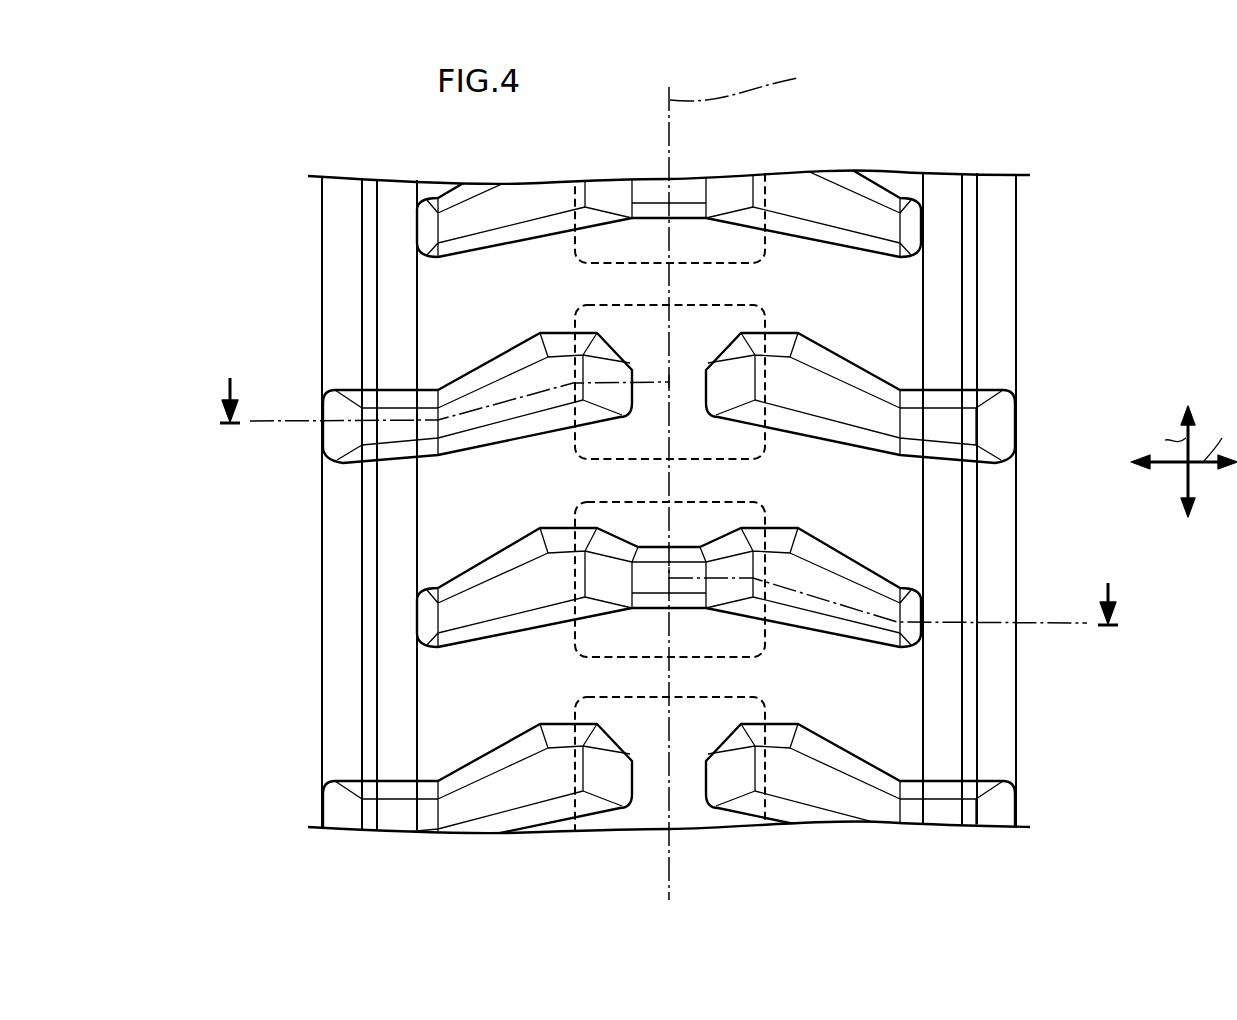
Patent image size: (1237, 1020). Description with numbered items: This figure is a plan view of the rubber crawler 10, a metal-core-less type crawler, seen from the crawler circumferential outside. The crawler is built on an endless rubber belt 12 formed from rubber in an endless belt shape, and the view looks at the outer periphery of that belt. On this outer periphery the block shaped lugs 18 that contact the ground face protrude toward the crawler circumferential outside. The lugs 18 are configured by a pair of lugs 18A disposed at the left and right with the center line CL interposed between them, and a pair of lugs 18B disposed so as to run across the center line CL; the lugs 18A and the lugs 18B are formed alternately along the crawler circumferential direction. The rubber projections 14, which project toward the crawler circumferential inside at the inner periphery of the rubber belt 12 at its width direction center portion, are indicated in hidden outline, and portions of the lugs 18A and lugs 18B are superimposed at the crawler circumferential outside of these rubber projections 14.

The rubber crawler 10 is at (232, 172).
The rubber belt 12 is at (1018, 222).
The rubber projections 14 is at (765, 248).
The lugs 18 is at (656, 496).
The lugs 18A is at (402, 388).
The lugs 18B is at (877, 568).